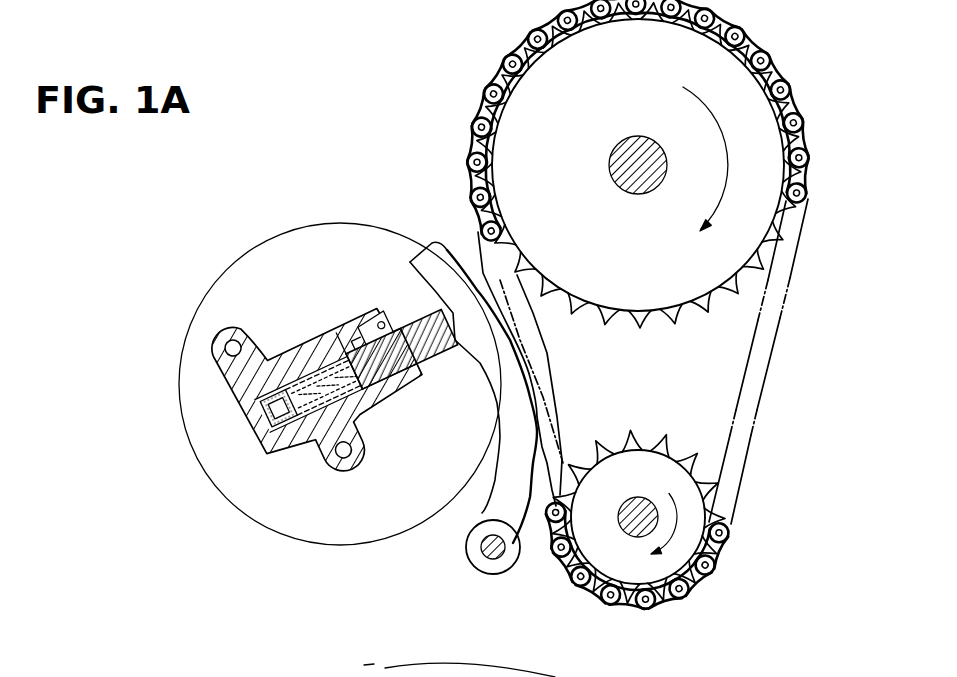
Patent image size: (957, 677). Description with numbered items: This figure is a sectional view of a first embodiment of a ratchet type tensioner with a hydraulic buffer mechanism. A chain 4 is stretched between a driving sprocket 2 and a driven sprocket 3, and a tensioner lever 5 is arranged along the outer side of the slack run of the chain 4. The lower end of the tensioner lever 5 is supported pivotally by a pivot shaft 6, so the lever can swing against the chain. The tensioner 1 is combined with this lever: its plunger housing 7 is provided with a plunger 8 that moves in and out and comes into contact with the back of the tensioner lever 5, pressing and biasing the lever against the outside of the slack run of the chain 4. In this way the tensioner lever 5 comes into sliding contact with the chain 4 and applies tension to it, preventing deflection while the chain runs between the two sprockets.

The tensioner 1 is at (236, 431).
The driving sprocket 2 is at (696, 540).
The driven sprocket 3 is at (753, 118).
The chain 4 is at (793, 86).
The tensioner lever 5 is at (440, 250).
The pivot shaft 6 is at (500, 556).
The plunger housing 7 is at (258, 330).
The plunger 8 is at (423, 318).